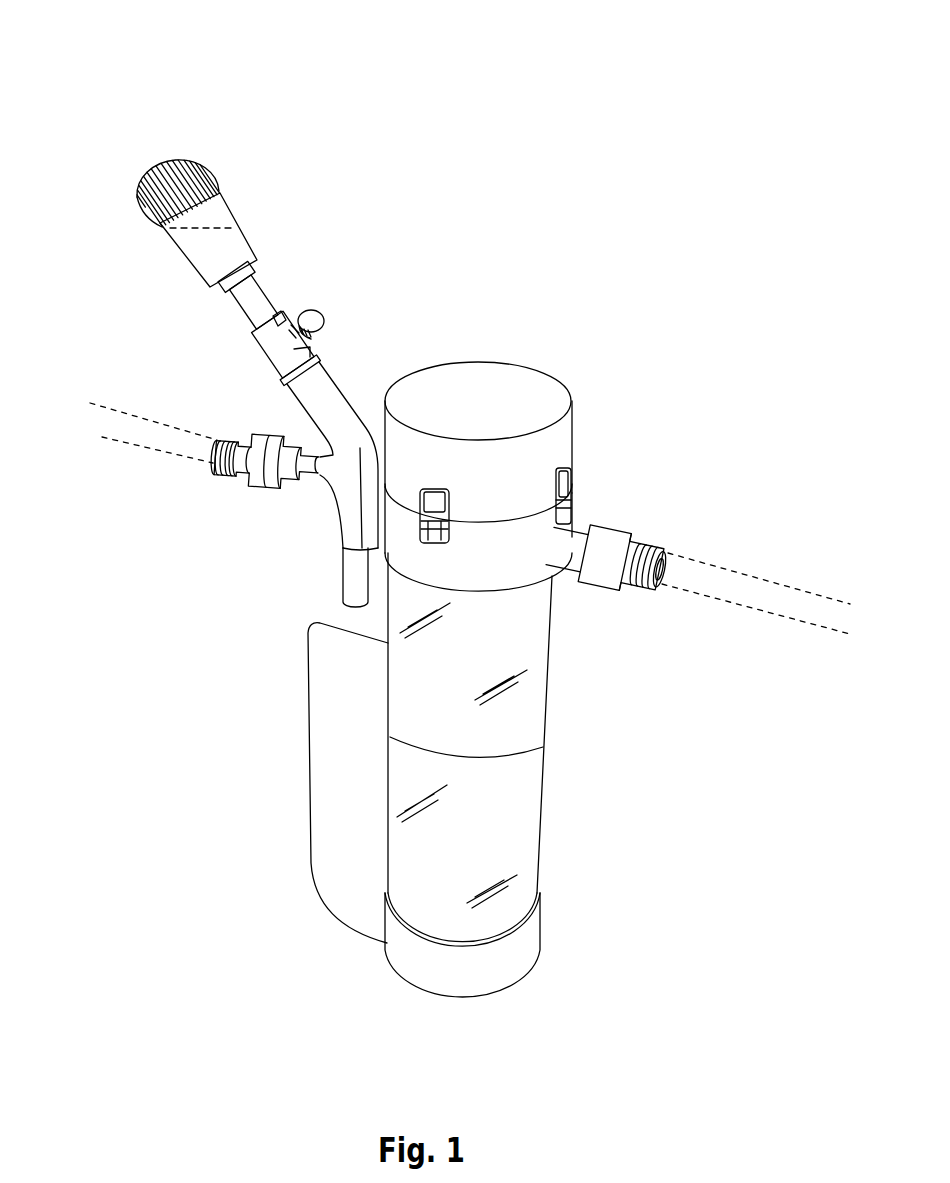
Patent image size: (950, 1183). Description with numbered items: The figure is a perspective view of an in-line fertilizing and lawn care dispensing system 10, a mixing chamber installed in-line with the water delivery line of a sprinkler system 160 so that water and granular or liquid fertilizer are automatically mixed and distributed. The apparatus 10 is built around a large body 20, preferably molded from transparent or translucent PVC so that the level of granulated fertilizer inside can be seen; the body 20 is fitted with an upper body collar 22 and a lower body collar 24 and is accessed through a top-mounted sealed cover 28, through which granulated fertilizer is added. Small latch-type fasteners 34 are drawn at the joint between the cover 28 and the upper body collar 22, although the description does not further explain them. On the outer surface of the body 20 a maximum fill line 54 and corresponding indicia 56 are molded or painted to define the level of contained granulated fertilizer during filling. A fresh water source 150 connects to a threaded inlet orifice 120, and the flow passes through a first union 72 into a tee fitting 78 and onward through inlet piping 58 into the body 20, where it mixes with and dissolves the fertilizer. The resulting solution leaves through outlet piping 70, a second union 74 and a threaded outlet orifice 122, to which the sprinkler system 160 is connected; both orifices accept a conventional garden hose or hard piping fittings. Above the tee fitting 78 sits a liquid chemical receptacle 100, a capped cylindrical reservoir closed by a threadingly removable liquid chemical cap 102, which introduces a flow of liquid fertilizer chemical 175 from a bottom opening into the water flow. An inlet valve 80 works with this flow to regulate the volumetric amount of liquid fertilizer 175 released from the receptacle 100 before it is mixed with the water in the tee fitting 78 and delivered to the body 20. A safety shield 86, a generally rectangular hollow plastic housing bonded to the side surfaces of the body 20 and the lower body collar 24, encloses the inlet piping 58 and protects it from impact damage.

The in-line fertilizing and lawn care dispensing system 10 is at (96, 109).
The body 20 is at (515, 838).
The upper body collar 22 is at (542, 523).
The lower body collar 24 is at (531, 934).
The cover 28 is at (494, 383).
The latch 34 is at (563, 472).
The maximum fill line 54 is at (541, 747).
The maximum fill line indicia 56 is at (443, 752).
The inlet piping sections 58 is at (250, 295).
The outlet piping 70 is at (569, 557).
The first union 72 is at (258, 465).
The second union 74 is at (628, 560).
The tee fitting 78 is at (337, 507).
The inlet valve 80 is at (306, 345).
The safety shield 86 is at (333, 744).
The liquid chemical receptacle 100 is at (210, 250).
The liquid chemical cap 102 is at (155, 182).
The inlet orifice 120 is at (222, 440).
The outlet orifice 122 is at (652, 583).
The water source 150 is at (112, 438).
The sprinkler system 160 is at (771, 587).
The liquid fertilizer chemical 175 is at (187, 226).